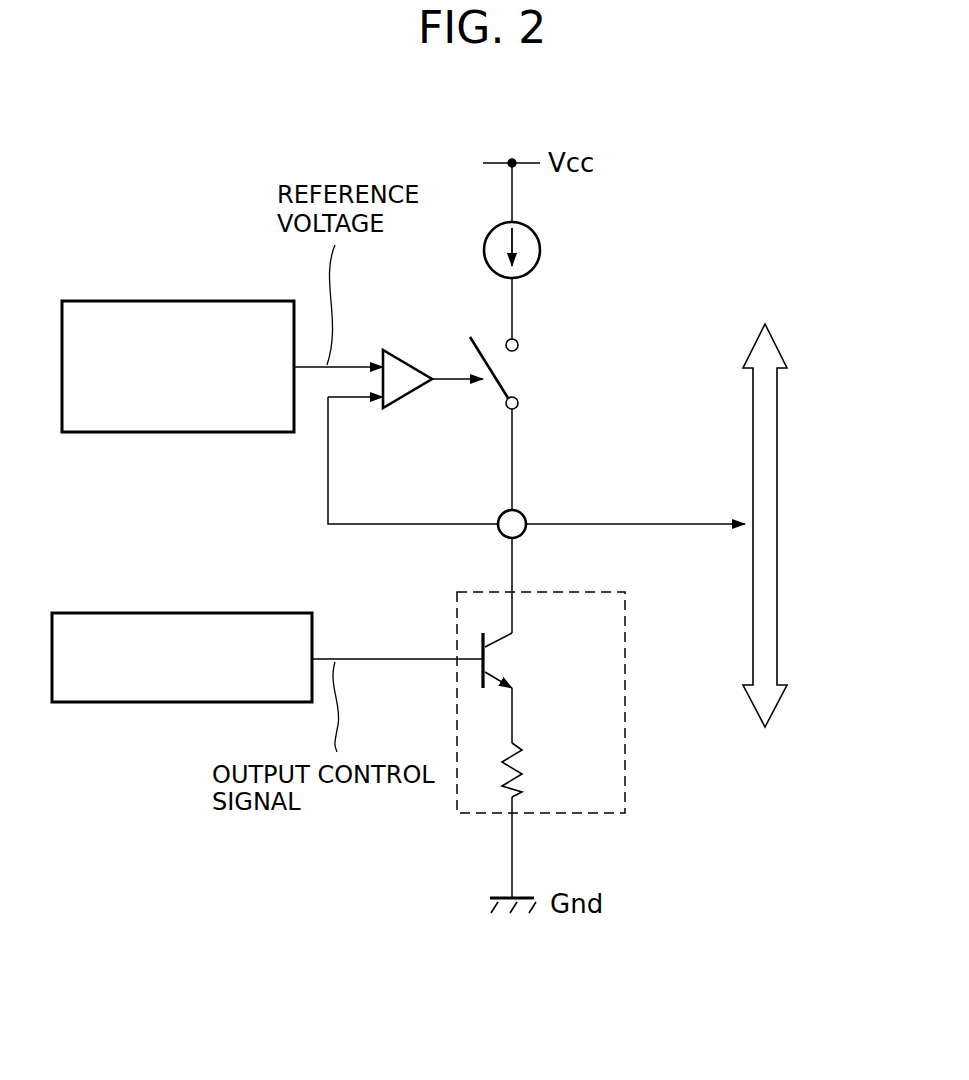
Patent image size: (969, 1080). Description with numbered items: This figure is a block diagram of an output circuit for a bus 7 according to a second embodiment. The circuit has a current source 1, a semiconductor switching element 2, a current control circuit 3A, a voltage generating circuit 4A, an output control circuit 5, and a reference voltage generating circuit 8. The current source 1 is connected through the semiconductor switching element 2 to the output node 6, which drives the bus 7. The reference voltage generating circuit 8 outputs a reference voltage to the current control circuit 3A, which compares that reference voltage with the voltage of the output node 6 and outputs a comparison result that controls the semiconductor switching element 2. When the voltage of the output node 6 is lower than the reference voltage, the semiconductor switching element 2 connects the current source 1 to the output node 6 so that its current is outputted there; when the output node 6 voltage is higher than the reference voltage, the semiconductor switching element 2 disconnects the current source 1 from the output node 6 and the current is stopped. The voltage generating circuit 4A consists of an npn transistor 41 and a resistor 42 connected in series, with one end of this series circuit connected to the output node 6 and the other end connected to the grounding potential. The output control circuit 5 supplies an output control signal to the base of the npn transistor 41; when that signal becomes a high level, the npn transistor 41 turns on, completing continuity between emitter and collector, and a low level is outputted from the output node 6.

The current source 1 is at (540, 247).
The semiconductor switching element 2 is at (515, 373).
The current control circuit 3A is at (405, 395).
The voltage generating circuit 4A is at (578, 702).
The npn transistor 41 is at (510, 657).
The resistor 42 is at (522, 763).
The output control circuit 5 is at (178, 613).
The output node 6 is at (523, 512).
The bus 7 is at (779, 547).
The reference voltage generating circuit 8 is at (178, 301).